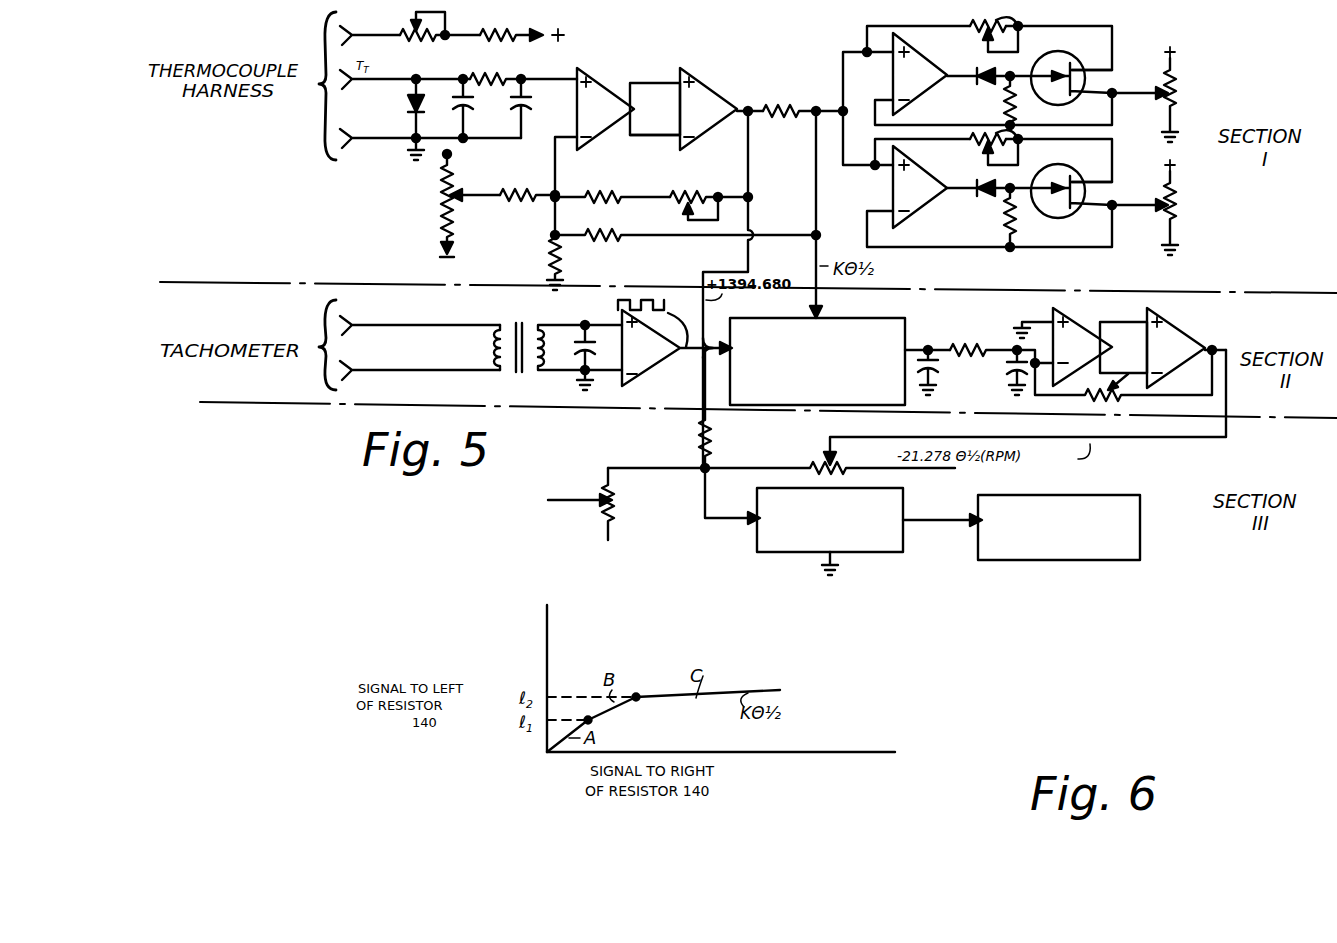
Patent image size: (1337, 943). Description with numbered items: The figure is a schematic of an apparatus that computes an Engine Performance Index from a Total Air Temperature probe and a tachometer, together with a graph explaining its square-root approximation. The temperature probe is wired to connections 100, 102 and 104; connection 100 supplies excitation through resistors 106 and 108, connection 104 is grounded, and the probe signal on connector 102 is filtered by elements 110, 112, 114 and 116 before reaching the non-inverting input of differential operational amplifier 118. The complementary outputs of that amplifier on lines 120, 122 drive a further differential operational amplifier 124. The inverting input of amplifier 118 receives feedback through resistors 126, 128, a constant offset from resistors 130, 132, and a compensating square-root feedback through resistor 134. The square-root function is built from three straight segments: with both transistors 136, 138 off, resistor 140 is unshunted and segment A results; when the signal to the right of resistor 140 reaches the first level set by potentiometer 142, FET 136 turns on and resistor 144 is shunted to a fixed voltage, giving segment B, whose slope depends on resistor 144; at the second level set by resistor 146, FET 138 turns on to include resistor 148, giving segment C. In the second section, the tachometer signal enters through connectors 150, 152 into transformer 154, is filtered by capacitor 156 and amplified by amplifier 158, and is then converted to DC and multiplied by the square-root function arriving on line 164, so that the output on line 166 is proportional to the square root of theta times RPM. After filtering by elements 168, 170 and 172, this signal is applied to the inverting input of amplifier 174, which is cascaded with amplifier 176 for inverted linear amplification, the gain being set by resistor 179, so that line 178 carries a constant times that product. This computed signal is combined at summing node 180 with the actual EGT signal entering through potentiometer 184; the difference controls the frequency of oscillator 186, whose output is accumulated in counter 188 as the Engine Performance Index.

The connection 100 is at (354, 42).
The connector 102 is at (405, 91).
The connection 104 is at (430, 150).
The resistor 106 is at (428, 42).
The resistor 108 is at (508, 32).
The filter element 110 is at (408, 112).
The filter element 112 is at (476, 106).
The filter element 114 is at (496, 72).
The filter element 116 is at (536, 106).
The differential operational amplifier 118 is at (602, 82).
The line 120 is at (652, 83).
The line 122 is at (630, 138).
The differential operational amplifier 124 is at (720, 96).
The resistor 126 is at (711, 193).
The resistor 128 is at (610, 185).
The resistor 130 is at (514, 204).
The resistor 132 is at (446, 203).
The resistor 134 is at (608, 240).
The FET transistor 136 is at (1068, 104).
The FET transistor 138 is at (1040, 220).
The resistor 140 is at (776, 106).
The potentiometer 142 is at (1184, 105).
The resistor 144 is at (1044, 60).
The resistor 146 is at (1184, 220).
The resistor 148 is at (1040, 174).
The connector 150 is at (352, 324).
The connector 152 is at (420, 380).
The transformer 154 is at (525, 322).
The capacitor 156 is at (600, 322).
The amplifier 158 is at (656, 372).
The line 164 is at (822, 311).
The line 166 is at (922, 345).
The filter element 168 is at (945, 368).
The filter element 170 is at (962, 356).
The filter element 172 is at (996, 384).
The amplifier 174 is at (1080, 328).
The amplifier 176 is at (1180, 346).
The line 178 is at (1220, 354).
The resistor 179 is at (1118, 407).
The summing node 180 is at (716, 470).
The potentiometer 184 is at (618, 500).
The oscillator 186 is at (903, 555).
The counter 188 is at (1092, 490).